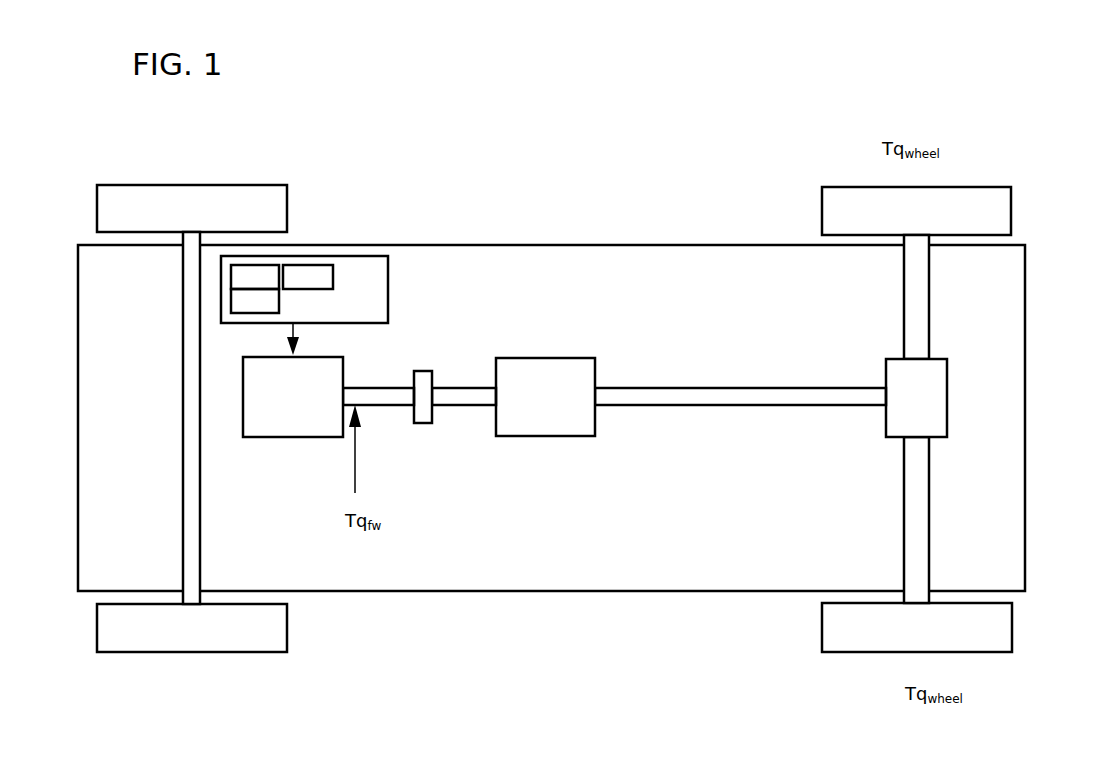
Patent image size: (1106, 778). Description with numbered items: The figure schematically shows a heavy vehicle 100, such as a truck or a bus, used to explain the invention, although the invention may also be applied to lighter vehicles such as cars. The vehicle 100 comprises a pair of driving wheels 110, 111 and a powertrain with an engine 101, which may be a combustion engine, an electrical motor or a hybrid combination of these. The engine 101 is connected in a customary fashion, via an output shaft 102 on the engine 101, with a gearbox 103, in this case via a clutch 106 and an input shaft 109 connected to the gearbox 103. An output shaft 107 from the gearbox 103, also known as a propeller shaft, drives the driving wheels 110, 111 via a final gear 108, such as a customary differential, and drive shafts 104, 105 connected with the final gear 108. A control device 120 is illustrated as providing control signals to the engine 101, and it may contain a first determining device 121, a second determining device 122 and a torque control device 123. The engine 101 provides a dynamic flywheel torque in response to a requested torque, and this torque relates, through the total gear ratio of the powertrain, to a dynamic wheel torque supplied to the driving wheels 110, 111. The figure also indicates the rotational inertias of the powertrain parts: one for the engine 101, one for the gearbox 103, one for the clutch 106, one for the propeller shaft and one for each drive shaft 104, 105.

The vehicle 100 is at (469, 110).
The engine 101 is at (270, 427).
The output shaft 102 is at (362, 393).
The gearbox 103 is at (547, 367).
The drive shaft 104 is at (920, 293).
The drive shaft 105 is at (927, 525).
The clutch 106 is at (420, 413).
The output shaft from the gearbox 107 is at (820, 400).
The final gear 108 is at (942, 393).
The input shaft 109 is at (453, 395).
The driving wheel 110 is at (1008, 627).
The driving wheel 111 is at (1008, 203).
The control device 120 is at (297, 305).
The first determining device 121 is at (255, 277).
The second determining device 122 is at (255, 301).
The torque control device 123 is at (308, 277).